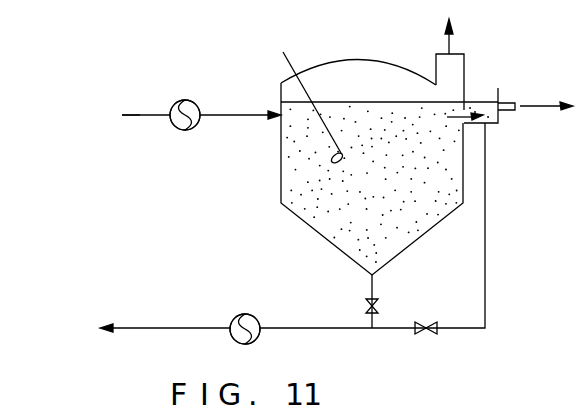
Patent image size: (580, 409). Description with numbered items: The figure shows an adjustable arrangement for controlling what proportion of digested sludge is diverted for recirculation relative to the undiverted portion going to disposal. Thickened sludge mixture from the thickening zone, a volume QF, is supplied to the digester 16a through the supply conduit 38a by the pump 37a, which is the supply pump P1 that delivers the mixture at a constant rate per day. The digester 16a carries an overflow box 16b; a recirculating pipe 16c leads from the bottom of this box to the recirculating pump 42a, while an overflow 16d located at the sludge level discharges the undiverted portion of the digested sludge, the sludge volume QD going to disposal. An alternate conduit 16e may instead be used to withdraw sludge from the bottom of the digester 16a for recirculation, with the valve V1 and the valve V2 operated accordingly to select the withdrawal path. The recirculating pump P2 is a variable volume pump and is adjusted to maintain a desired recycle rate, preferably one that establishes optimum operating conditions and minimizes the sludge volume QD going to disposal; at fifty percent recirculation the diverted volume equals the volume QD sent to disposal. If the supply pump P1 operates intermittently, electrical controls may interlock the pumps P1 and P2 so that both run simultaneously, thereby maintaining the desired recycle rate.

The digester 16a is at (270, 165).
The overflow box 16b is at (500, 118).
The recirculating pipe 16c is at (488, 200).
The overflow 16d is at (577, 123).
The alternate conduit 16e is at (375, 287).
The pump 37a is at (192, 100).
The supply conduit 38a is at (231, 113).
The recirculating pump 42a is at (250, 314).
The supply pump P1 is at (186, 128).
The recirculating pump P2 is at (248, 345).
The valve V1 is at (430, 336).
The valve V2 is at (367, 305).
The volume of thickened sludge mixture QF is at (132, 118).
The sludge volume going to disposal QD is at (145, 330).